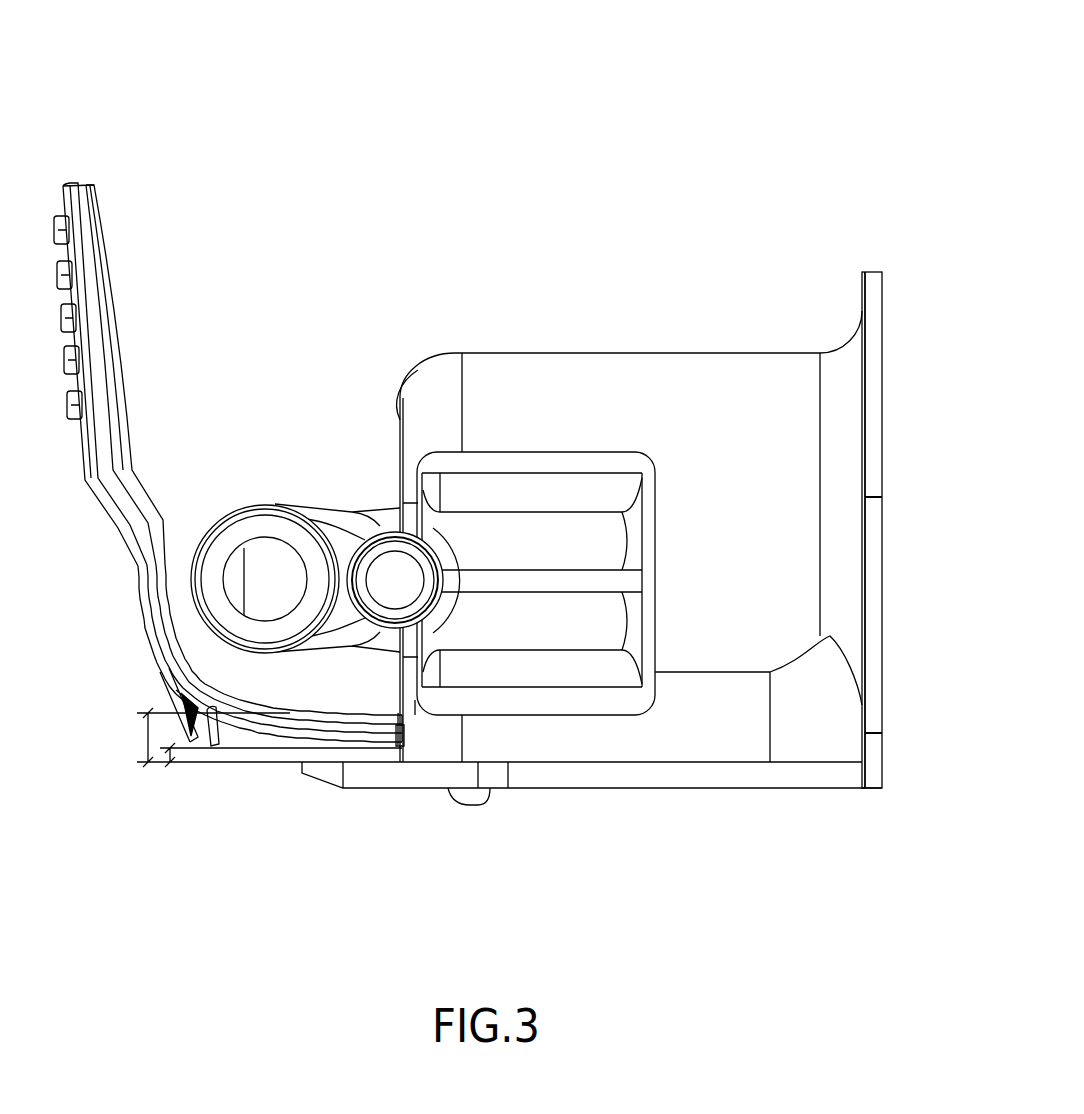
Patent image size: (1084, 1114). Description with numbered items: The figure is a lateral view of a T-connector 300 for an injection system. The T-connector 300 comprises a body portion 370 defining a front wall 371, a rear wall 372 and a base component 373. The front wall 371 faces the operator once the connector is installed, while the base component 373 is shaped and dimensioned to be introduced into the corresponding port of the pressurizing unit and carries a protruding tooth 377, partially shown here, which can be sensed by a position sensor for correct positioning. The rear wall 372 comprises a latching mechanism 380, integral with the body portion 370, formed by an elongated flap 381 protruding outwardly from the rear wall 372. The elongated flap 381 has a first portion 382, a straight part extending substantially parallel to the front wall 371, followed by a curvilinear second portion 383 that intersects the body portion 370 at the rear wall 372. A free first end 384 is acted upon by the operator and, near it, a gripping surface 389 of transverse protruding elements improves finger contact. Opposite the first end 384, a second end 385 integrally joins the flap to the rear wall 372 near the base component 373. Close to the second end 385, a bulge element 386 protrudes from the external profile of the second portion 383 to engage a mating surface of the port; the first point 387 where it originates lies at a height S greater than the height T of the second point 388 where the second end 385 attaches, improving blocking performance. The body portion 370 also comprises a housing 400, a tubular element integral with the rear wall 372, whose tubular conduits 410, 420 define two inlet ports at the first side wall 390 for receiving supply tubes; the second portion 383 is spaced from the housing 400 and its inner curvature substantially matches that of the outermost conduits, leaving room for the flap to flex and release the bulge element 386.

The T-connector 300 is at (688, 118).
The body portion 370 is at (690, 375).
The front wall 371 is at (873, 320).
The rear wall 372 is at (443, 368).
The base component 373 is at (683, 778).
The protruding tooth 377 is at (475, 797).
The latching mechanism 380 is at (143, 248).
The elongated flap 381 is at (105, 295).
The first portion 382 is at (66, 425).
The second portion 383 is at (122, 636).
The free first end 384 is at (72, 185).
The second end 385 is at (400, 729).
The bulge element 386 is at (203, 738).
The first point 387 is at (216, 710).
The second point 388 is at (400, 732).
The gripping surface 389 is at (66, 268).
The first side wall 390 is at (760, 538).
The housing 400 is at (268, 448).
The tubular conduit 410 is at (258, 593).
The tubular conduit 420 is at (385, 568).